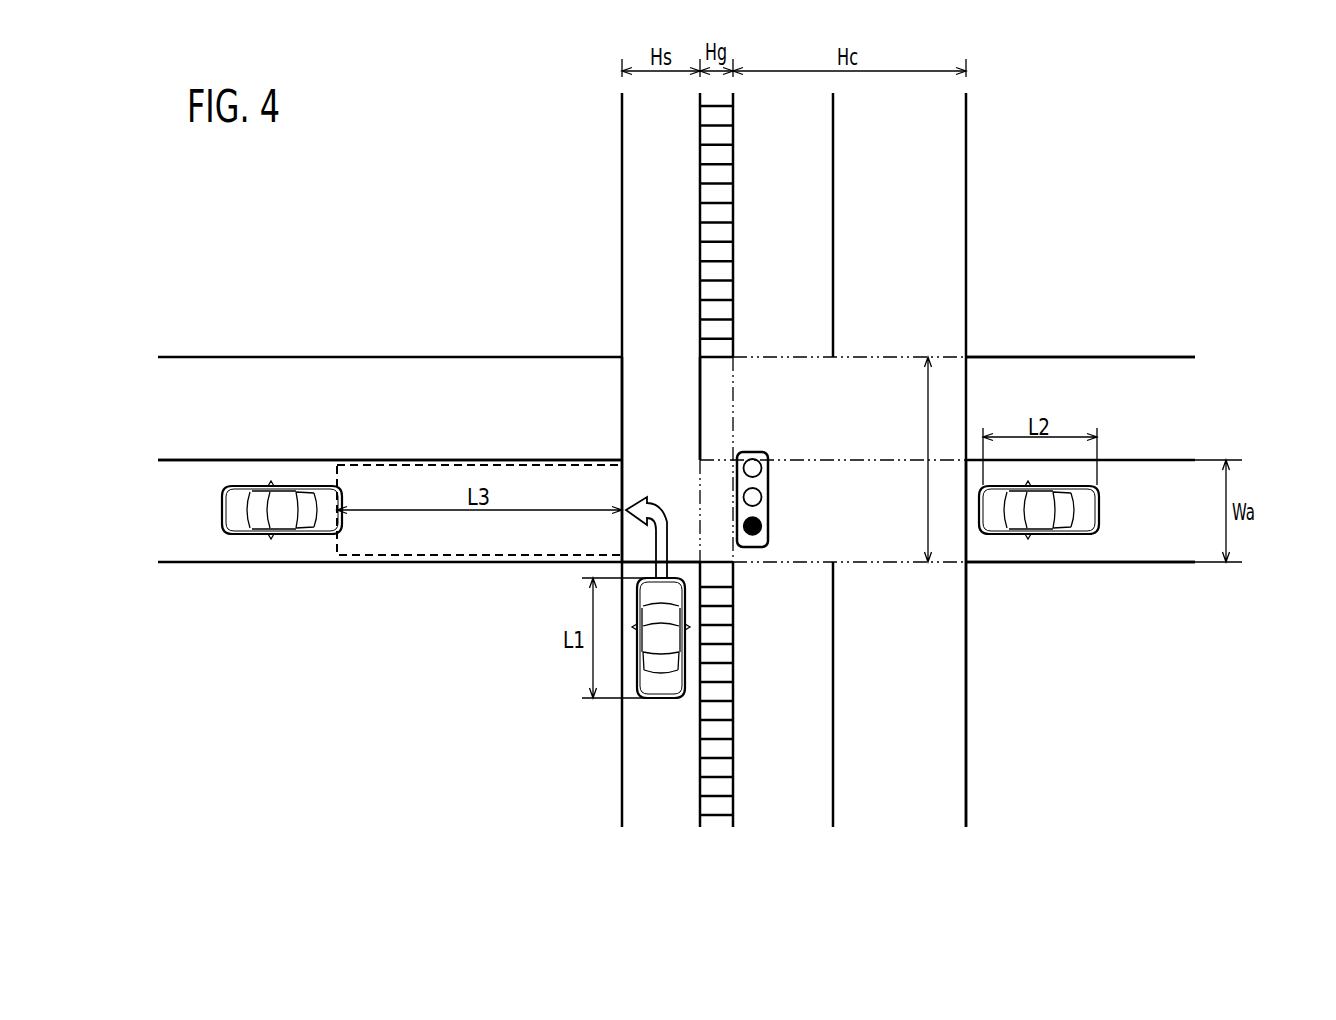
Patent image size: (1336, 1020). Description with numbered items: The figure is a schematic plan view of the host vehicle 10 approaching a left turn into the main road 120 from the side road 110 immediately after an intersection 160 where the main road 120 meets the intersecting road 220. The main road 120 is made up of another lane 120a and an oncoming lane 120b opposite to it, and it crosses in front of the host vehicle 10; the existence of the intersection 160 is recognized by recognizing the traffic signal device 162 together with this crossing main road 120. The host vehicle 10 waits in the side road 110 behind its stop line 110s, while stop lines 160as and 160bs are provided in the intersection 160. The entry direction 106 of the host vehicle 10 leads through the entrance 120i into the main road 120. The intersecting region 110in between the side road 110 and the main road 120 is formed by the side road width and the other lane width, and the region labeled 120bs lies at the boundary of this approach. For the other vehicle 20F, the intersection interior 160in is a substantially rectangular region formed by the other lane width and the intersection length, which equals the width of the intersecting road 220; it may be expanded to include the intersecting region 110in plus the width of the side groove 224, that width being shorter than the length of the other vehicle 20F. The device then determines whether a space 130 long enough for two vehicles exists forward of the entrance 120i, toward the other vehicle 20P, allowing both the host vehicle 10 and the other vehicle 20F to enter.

The host vehicle 10 is at (663, 697).
The other vehicle 20P is at (227, 505).
The other vehicle 20F is at (1085, 508).
The entry direction 106 is at (663, 520).
The side road 110 is at (655, 775).
The intersecting region 110in is at (637, 540).
The stop line 110s is at (690, 568).
The main road 120 is at (443, 376).
The other lane 120a is at (1172, 532).
The oncoming lane 120b is at (1107, 392).
The cross road boundary side 120bs is at (622, 408).
The entrance 120i is at (640, 529).
The space 130 is at (405, 465).
The intersection 160 is at (985, 605).
The intersection interior 160in is at (868, 517).
The stop line 160as is at (968, 542).
The stop line 160bs is at (700, 390).
The traffic signal device 162 is at (768, 514).
The intersecting road 220 is at (935, 720).
The side groove 224 is at (716, 730).